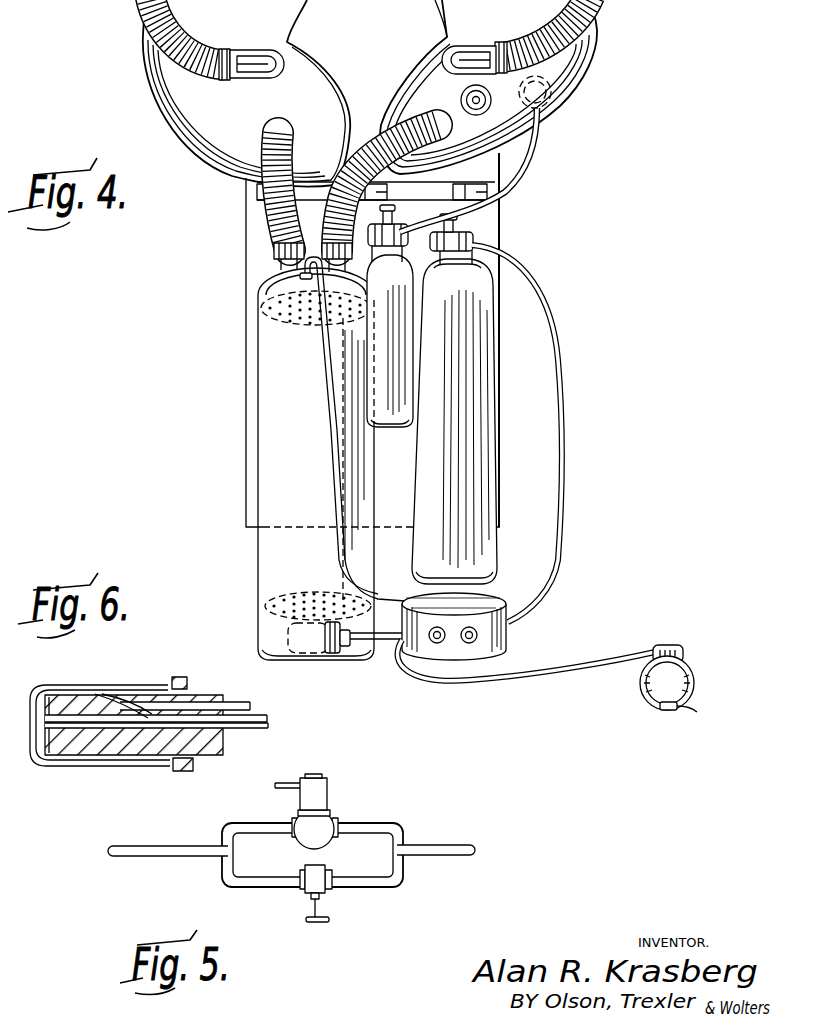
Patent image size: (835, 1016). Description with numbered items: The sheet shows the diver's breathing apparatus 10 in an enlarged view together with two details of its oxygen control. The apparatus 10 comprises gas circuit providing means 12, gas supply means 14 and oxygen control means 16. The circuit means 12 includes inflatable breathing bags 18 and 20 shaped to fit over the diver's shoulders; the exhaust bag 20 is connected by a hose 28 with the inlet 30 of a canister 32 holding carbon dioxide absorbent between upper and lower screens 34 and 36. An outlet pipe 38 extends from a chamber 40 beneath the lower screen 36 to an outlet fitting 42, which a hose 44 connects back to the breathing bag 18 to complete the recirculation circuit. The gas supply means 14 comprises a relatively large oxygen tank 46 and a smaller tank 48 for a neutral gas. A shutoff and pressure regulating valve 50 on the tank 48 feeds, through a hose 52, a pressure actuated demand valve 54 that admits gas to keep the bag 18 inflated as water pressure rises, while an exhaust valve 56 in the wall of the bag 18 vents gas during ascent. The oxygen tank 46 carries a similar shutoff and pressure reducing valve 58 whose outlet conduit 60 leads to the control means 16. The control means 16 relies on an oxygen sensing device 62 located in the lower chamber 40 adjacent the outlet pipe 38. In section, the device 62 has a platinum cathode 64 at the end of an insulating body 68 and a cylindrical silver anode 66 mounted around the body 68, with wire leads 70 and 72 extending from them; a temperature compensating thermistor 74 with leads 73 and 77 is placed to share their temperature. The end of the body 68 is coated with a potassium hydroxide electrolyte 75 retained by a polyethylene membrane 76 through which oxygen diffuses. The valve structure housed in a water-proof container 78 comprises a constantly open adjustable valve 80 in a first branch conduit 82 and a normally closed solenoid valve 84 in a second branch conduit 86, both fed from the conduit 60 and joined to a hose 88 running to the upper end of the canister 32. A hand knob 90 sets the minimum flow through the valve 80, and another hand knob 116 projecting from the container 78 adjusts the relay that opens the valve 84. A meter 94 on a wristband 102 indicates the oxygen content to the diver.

In FIG. 4, the apparatus 10 is at (580, 250).
In FIG. 4, the gas circuit providing means 12 is at (207, 158).
In FIG. 4, the gas supply means 14 is at (505, 383).
In FIG. 4, the oxygen control means 16 is at (517, 640).
In FIG. 4, the breathing bag 18 is at (600, 50).
In FIG. 4, the exhaust breathing bag 20 is at (152, 70).
In FIG. 4, the hose 28 is at (265, 186).
In FIG. 4, the inlet 30 is at (282, 260).
In FIG. 4, the canister 32 is at (274, 397).
In FIG. 4, the upper screen 34 is at (260, 305).
In FIG. 4, the lower screen 36 is at (276, 606).
In FIG. 4, the outlet pipe 38 is at (337, 450).
In FIG. 4, the chamber 40 is at (278, 632).
In FIG. 4, the outlet fitting 42 is at (352, 262).
In FIG. 4, the hose 44 is at (380, 138).
In FIG. 4, the first tank 46 is at (487, 352).
In FIG. 4, the second tank 48 is at (400, 349).
In FIG. 4, the shutoff and pressure regulating valve 50 is at (393, 224).
In FIG. 4, the hose 52 is at (540, 165).
In FIG. 4, the pressure actuated demand valve 54 is at (552, 92).
In FIG. 4, the exhaust valve 56 is at (460, 99).
In FIG. 4, the combined shutoff and pressure reducing valve 58 is at (480, 245).
In FIG. 4, the conduit 60 is at (562, 478).
In FIG. 5, the conduit 60 is at (443, 845).
In FIG. 4, the oxygen sensing device 62 is at (315, 652).
In FIG. 6, the cathode 64 is at (32, 745).
In FIG. 6, the anode 66 is at (87, 760).
In FIG. 6, the body 68 is at (145, 745).
In FIG. 6, the wire lead 70 is at (245, 728).
In FIG. 6, the wire lead 72 is at (251, 704).
In FIG. 6, the thermistor lead 73 is at (98, 692).
In FIG. 6, the temperature compensating thermistor 74 is at (118, 702).
In FIG. 6, the electrolyte 75 is at (56, 685).
In FIG. 6, the membrane 76 is at (79, 690).
In FIG. 6, the thermistor lead 77 is at (269, 717).
In FIG. 4, the water-proof container 78 is at (549, 594).
In FIG. 5, the constantly open adjustable valve 80 is at (307, 893).
In FIG. 5, the first branch conduit 82 is at (378, 877).
In FIG. 5, the solenoid actuated valve 84 is at (324, 818).
In FIG. 5, the second branch conduit 86 is at (383, 818).
In FIG. 4, the hose 88 is at (337, 473).
In FIG. 5, the hose 88 is at (145, 851).
In FIG. 4, the hand knob 90 is at (470, 644).
In FIG. 5, the hand knob 90 is at (311, 923).
In FIG. 4, the meter 94 is at (672, 650).
In FIG. 4, the wristband 102 is at (692, 670).
In FIG. 4, the hand knob 116 is at (435, 644).